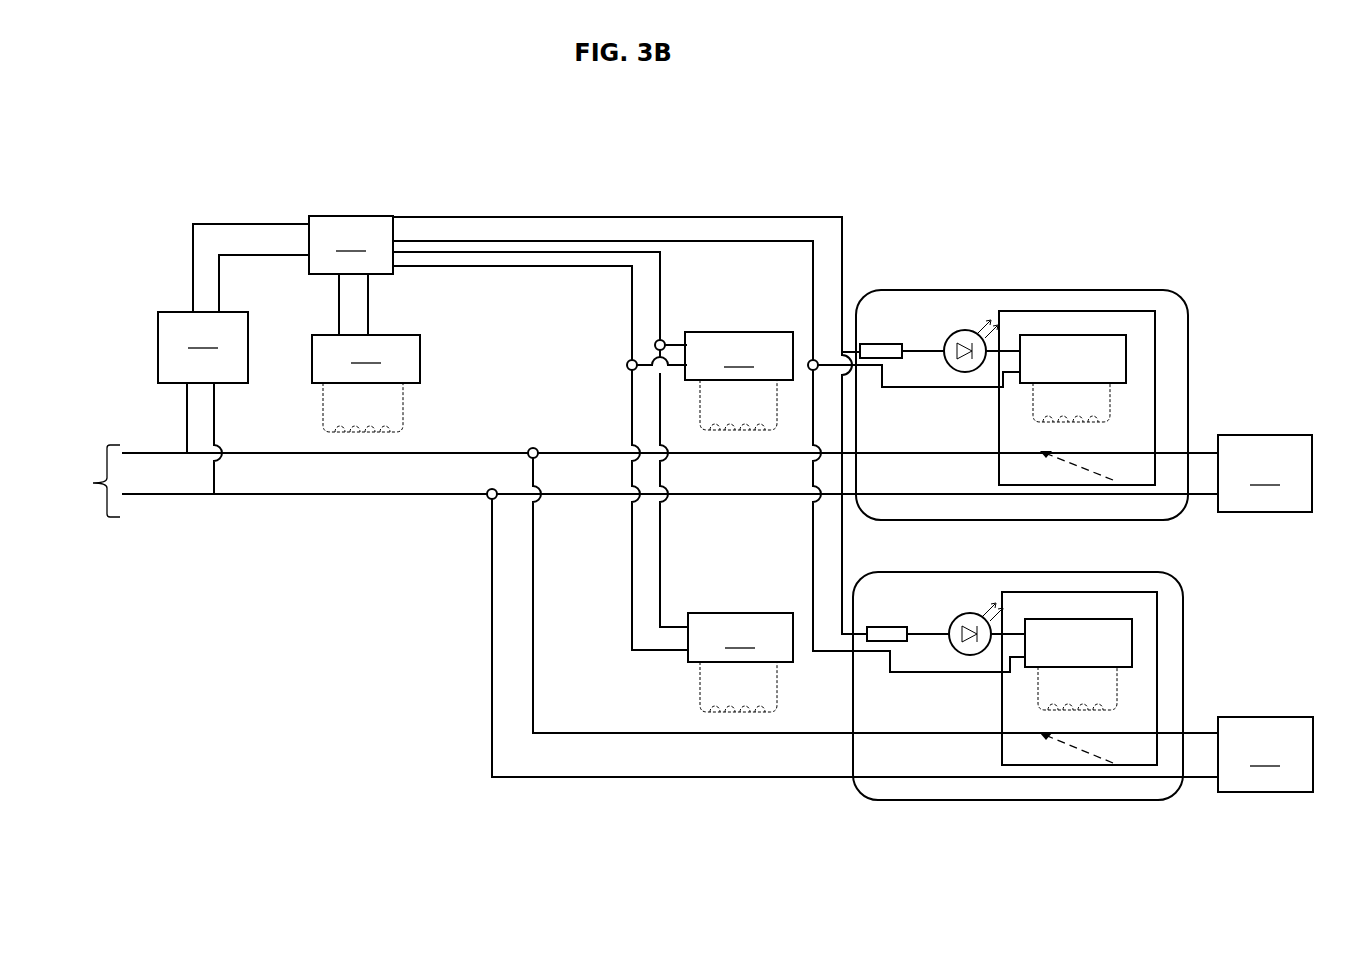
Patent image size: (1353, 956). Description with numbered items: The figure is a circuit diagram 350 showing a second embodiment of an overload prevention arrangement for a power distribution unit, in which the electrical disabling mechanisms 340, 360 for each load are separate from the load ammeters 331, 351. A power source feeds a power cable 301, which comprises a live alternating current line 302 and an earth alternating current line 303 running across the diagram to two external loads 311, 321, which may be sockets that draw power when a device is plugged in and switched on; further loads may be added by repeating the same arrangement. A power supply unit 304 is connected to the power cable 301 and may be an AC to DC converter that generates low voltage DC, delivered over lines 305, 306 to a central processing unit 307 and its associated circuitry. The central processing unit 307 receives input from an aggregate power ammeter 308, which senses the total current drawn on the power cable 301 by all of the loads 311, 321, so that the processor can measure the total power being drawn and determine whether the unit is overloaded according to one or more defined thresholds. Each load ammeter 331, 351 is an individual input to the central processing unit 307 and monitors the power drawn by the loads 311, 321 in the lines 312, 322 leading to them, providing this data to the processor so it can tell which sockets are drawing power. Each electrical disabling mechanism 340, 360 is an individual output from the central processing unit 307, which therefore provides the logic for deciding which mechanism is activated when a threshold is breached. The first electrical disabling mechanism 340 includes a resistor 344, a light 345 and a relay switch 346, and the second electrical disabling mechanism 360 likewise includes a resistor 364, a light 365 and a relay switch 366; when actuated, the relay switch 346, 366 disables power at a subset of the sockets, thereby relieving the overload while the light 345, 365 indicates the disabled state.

The circuit diagram 350 is at (207, 137).
The power cable 301 is at (88, 467).
The live alternating current line 302 is at (270, 447).
The earth alternating current line 303 is at (330, 487).
The power supply unit 304 is at (203, 403).
The line 305 is at (193, 241).
The line 306 is at (219, 280).
The central processing unit 307 is at (667, 444).
The aggregate power ammeter 308 is at (366, 383).
The load 311 is at (1265, 473).
The line 312 is at (757, 455).
The load 321 is at (1265, 754).
The line 322 is at (797, 733).
The load ammeter 331 is at (739, 381).
The electrical disabling mechanism 340 is at (1033, 290).
The resistor 344 is at (883, 343).
The light 345 is at (955, 330).
The relay switch 346 is at (1093, 310).
The load ammeter 351 is at (740, 662).
The electrical disabling mechanism 360 is at (1185, 645).
The resistor 364 is at (880, 625).
The light 365 is at (955, 614).
The relay switch 366 is at (1160, 600).